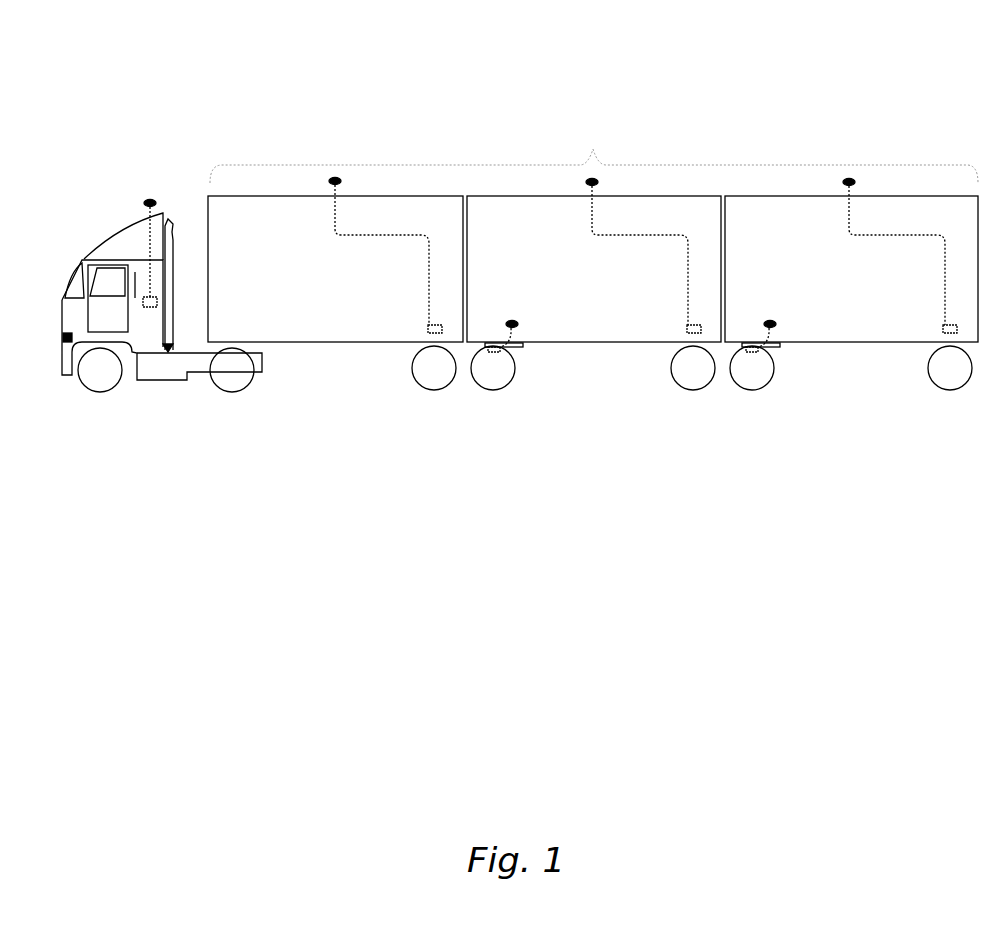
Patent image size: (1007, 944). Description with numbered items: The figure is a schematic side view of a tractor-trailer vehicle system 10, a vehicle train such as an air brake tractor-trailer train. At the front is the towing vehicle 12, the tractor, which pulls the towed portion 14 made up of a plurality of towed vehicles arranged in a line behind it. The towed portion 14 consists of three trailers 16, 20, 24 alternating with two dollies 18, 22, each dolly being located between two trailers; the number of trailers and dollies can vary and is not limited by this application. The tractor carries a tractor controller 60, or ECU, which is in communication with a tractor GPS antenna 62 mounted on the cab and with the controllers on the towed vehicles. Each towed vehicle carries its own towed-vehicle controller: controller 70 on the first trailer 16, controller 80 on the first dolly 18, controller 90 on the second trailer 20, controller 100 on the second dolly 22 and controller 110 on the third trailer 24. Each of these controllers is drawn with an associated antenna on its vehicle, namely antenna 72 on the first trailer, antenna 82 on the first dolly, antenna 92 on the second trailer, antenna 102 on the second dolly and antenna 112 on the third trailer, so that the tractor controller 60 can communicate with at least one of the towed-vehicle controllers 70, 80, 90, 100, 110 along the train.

The tractor-trailer vehicle system 10 is at (384, 40).
The towing vehicle 12 is at (125, 248).
The towed portion 14 is at (594, 148).
The trailer 16 is at (343, 335).
The dolly 18 is at (505, 372).
The trailer 20 is at (612, 335).
The dolly 22 is at (763, 372).
The trailer 24 is at (870, 335).
The tractor controller 60 is at (150, 308).
The tractor GPS antenna 62 is at (154, 200).
The towed-vehicle controller 70 is at (428, 331).
The trailer 1 antenna 72 is at (343, 181).
The towed-vehicle controller 80 is at (494, 353).
The dolly 1 antenna 82 is at (507, 321).
The towed-vehicle controller 90 is at (682, 333).
The trailer 2 antenna 92 is at (600, 182).
The towed-vehicle controller 100 is at (752, 353).
The dolly 2 antenna 102 is at (765, 321).
The towed-vehicle controller 110 is at (944, 333).
The trailer 3 antenna 112 is at (857, 182).